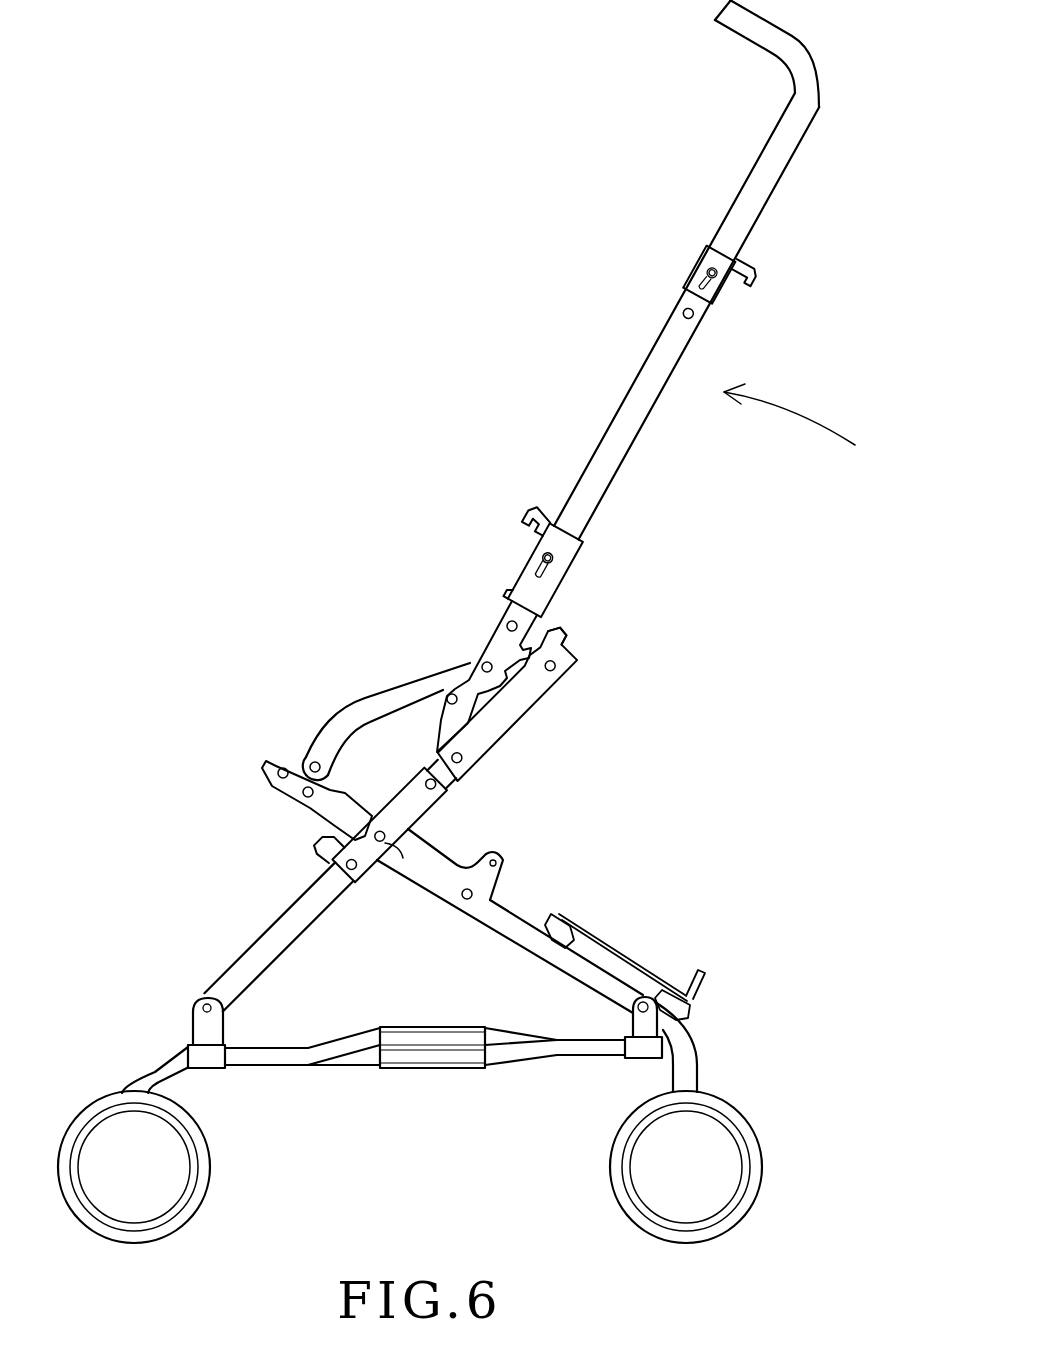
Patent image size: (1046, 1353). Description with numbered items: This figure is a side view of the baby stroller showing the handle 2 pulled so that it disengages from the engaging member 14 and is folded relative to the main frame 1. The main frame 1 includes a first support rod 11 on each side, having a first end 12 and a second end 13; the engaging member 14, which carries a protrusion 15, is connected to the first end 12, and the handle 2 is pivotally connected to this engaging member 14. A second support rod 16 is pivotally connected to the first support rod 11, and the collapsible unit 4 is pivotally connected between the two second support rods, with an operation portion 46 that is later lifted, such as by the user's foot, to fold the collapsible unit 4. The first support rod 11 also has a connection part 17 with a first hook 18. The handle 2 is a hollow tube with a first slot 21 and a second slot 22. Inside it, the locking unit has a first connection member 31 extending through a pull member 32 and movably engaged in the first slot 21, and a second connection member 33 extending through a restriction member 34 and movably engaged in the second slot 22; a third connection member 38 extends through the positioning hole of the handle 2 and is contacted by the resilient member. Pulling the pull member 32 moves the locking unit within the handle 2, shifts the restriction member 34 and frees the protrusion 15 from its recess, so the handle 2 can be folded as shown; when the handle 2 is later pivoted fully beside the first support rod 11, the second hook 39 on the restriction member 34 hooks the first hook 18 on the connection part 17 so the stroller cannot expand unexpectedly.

The main frame 1 is at (356, 722).
The handle 2 is at (607, 430).
The collapsible unit 4 is at (616, 952).
The first support rod 11 is at (283, 920).
The first end 12 is at (432, 766).
The second end 13 is at (172, 1035).
The engaging member 14 is at (530, 693).
The protrusion 15 is at (571, 646).
The second support rod 16 is at (597, 974).
The connection part 17 is at (373, 858).
The first hook 18 is at (326, 847).
The first slot 21 is at (700, 284).
The second slot 22 is at (526, 556).
The first connection member 31 is at (742, 268).
The pull member 32 is at (710, 258).
The second connection member 33 is at (556, 560).
The restriction member 34 is at (547, 598).
The third connection member 38 is at (698, 316).
The second hook 39 is at (531, 516).
The operation portion 46 is at (701, 968).